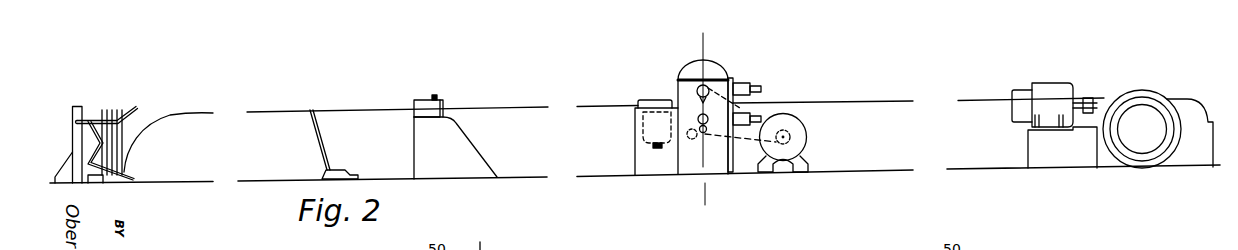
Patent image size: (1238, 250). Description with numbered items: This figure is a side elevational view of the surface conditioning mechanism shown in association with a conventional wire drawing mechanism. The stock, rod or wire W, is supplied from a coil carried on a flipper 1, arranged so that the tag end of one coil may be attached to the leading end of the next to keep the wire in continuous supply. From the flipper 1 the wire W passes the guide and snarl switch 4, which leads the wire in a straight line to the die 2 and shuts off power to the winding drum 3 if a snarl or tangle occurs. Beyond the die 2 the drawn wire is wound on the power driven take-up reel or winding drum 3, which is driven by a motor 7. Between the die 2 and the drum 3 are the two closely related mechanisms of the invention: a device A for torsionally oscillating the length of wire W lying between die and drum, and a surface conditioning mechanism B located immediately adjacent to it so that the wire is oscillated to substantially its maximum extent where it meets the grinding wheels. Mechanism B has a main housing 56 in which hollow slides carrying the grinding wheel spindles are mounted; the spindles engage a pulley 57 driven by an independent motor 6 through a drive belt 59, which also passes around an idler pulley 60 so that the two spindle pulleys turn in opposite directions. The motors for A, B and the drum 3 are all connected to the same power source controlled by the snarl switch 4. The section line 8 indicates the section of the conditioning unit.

The flipper 1 is at (137, 107).
The die 2 is at (415, 100).
The take-up reel or winding drum 3 is at (1158, 129).
The guide and snarl switch 4 is at (311, 111).
The motor 6 is at (800, 128).
The motor 7 is at (1020, 117).
The section line 8- 8 is at (705, 35).
The main housing 56 is at (703, 132).
The pulley 57 is at (688, 72).
The drive belt 59 is at (762, 117).
The idler pulley 60 is at (688, 136).
The wire oscillating device A is at (635, 152).
The surface conditioning mechanism B is at (713, 133).
The wire W is at (267, 112).